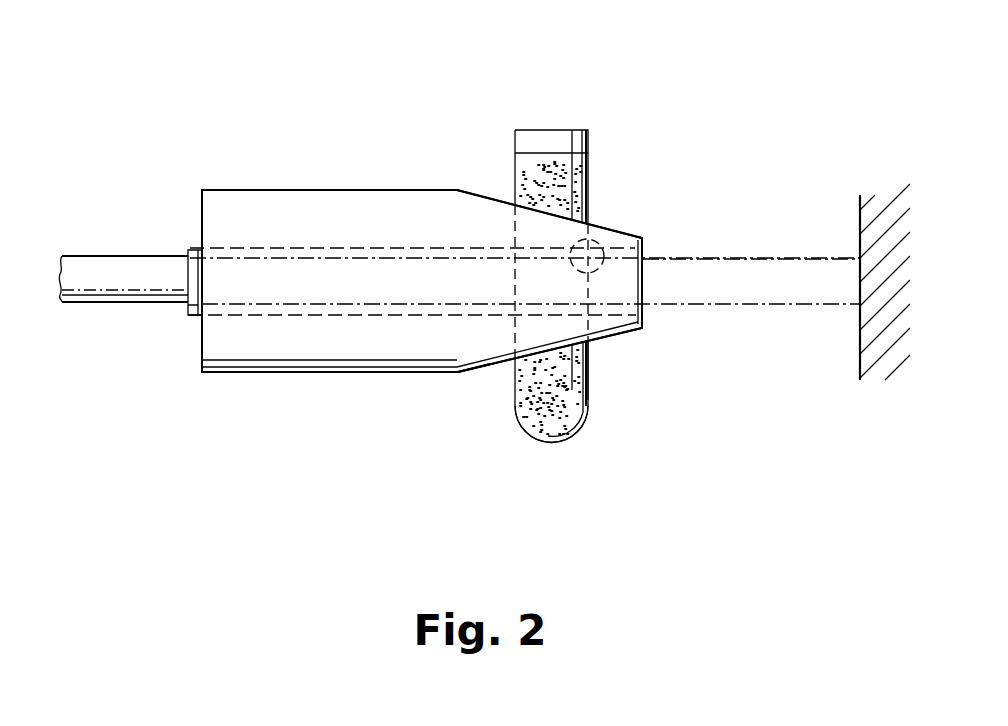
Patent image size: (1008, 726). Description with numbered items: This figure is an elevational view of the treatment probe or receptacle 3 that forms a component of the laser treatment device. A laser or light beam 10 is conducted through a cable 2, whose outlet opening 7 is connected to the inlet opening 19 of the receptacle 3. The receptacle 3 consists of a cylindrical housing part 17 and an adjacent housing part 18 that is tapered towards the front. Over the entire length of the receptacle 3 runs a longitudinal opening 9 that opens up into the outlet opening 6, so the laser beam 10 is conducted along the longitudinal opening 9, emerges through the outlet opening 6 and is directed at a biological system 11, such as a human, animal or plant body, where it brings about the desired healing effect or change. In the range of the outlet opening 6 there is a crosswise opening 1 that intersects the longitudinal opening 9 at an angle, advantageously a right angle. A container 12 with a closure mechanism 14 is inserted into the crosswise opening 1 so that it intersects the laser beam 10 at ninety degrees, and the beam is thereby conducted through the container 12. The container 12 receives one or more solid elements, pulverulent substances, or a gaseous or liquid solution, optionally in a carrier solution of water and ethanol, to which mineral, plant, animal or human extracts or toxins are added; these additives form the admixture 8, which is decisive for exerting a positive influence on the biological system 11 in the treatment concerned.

The crosswise opening 1 is at (600, 250).
The cable 2 is at (88, 260).
The treatment probe or receptacle 3 is at (222, 191).
The outlet opening 6 is at (645, 284).
The outlet opening of cable 7 is at (187, 276).
The admixture 8 is at (562, 417).
The longitudinal opening 9 is at (284, 312).
The laser beam 10 is at (748, 258).
The biological system 11 is at (868, 217).
The container 12 is at (588, 372).
The closure mechanism 14 is at (537, 140).
The cylindrical housing part 17 is at (383, 345).
The tapered housing part 18 is at (475, 347).
The inlet opening of the receptacle 19 is at (216, 278).